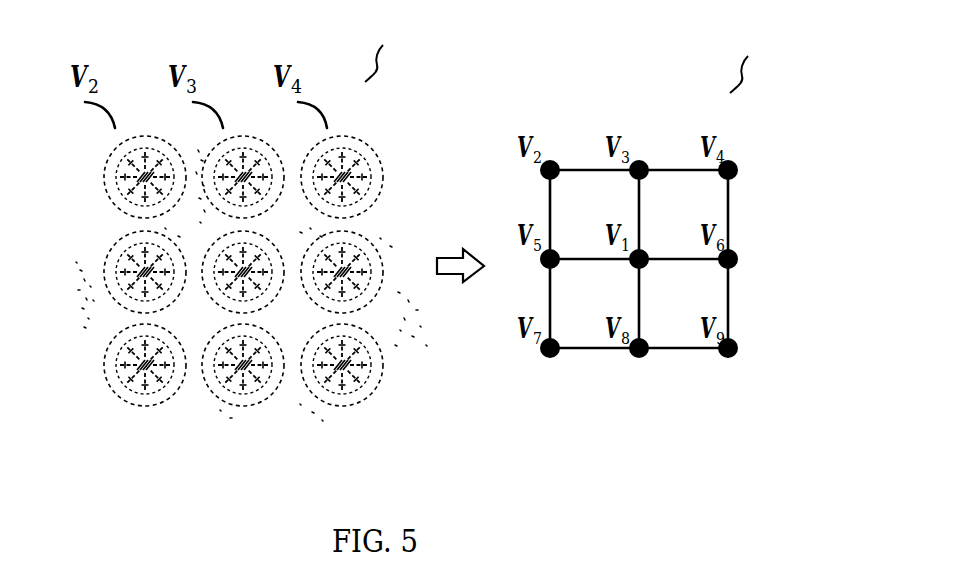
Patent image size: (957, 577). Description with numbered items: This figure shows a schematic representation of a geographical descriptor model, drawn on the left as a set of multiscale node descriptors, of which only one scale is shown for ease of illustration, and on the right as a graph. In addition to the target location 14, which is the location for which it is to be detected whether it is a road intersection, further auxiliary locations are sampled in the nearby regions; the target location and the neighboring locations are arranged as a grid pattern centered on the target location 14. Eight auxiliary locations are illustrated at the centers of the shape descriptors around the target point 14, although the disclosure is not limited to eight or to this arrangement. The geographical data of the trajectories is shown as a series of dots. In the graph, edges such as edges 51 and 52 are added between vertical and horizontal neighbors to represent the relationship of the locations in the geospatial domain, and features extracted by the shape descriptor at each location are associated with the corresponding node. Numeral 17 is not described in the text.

The target location 14 is at (92, 217).
The adjacent node 17 is at (343, 275).
The edge 51 is at (729, 229).
The edge 52 is at (729, 316).